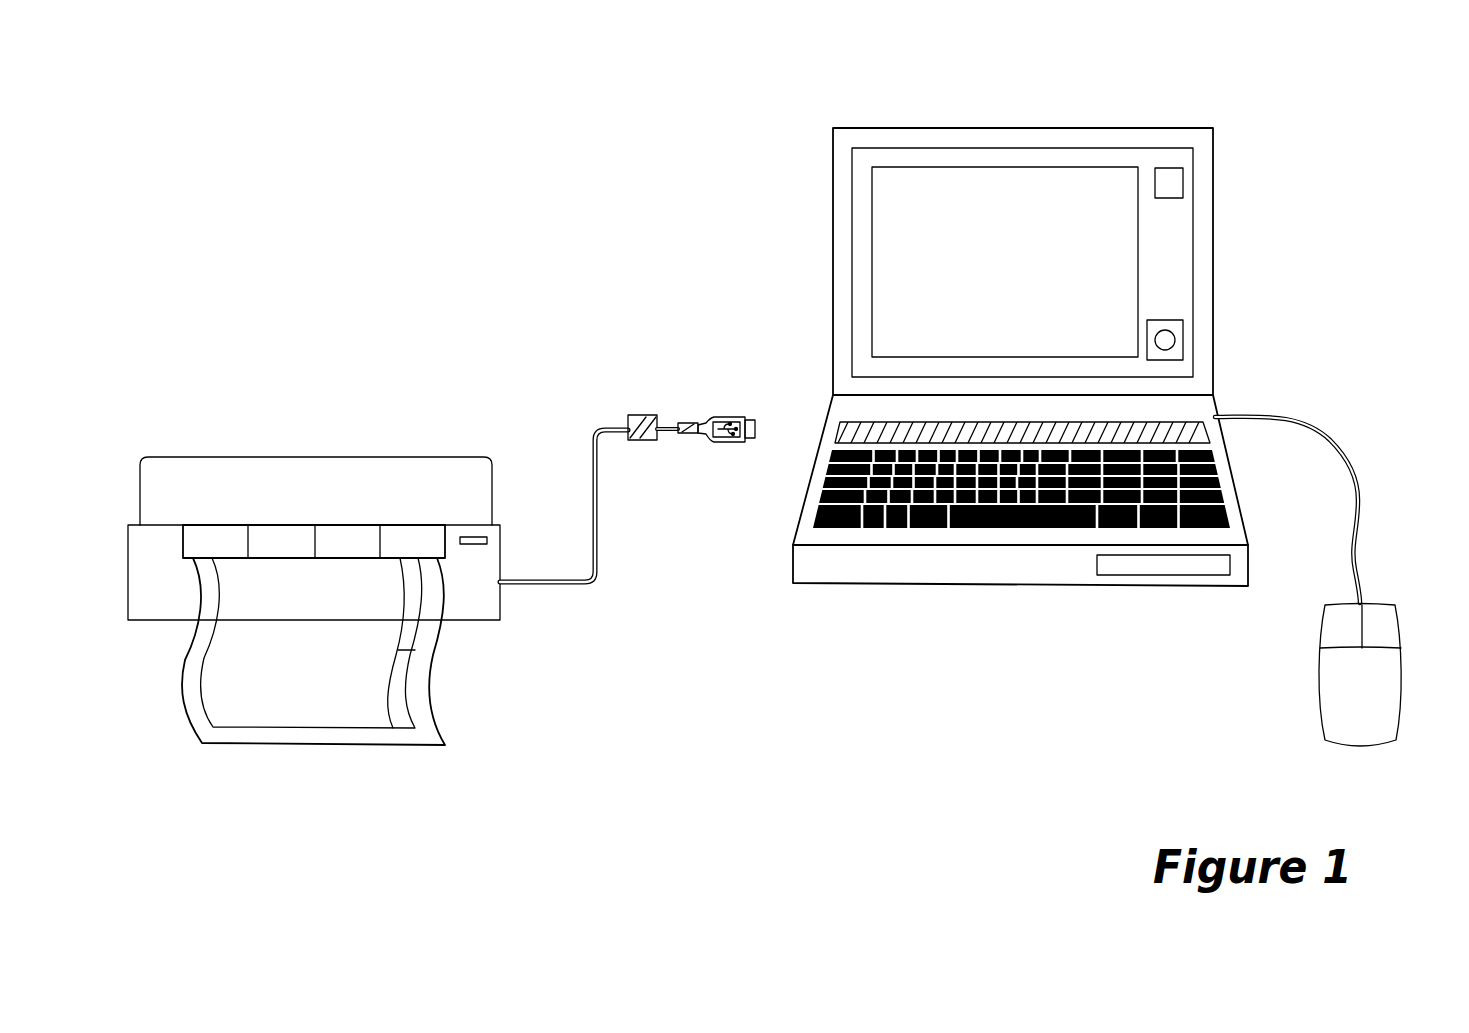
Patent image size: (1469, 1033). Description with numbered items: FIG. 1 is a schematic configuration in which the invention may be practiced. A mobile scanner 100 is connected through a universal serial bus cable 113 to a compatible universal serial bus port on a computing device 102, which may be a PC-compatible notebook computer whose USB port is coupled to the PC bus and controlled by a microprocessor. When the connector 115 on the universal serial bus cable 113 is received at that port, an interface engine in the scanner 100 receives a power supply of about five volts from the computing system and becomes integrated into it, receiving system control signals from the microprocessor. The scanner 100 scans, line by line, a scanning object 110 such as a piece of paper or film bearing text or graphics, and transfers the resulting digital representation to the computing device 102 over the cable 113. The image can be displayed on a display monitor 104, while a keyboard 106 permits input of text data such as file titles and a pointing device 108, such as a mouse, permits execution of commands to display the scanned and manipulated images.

The mobile scanner 100 is at (428, 411).
The computing device 102 is at (1069, 314).
The display monitor 104 is at (1080, 180).
The keyboard 106 is at (1223, 497).
The pointing device 108 is at (1367, 603).
The scanning object 110 is at (438, 740).
The universal serial bus cable 113 is at (603, 546).
The connector 115 is at (712, 423).